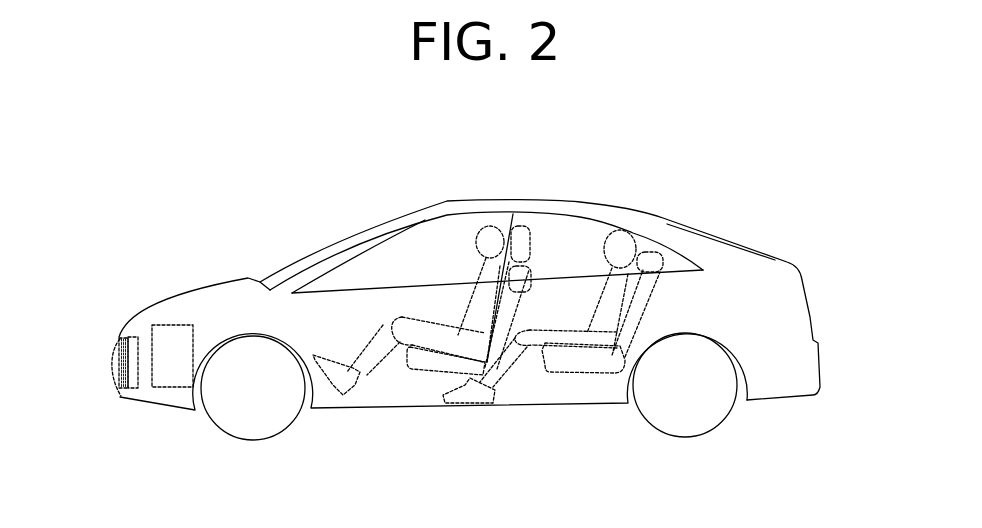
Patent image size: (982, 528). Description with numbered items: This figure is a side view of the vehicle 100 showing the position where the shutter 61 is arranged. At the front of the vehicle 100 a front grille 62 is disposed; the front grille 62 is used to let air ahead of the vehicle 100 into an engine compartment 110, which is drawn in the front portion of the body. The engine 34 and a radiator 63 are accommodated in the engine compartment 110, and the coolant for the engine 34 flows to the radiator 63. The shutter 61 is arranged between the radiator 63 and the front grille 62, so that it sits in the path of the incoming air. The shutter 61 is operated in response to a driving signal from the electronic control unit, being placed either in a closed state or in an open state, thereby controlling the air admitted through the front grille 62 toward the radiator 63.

The vehicle 100 is at (302, 252).
The engine compartment 110 is at (179, 313).
The engine 34 is at (189, 370).
The front grille 62 is at (112, 348).
The shutter 61 is at (123, 389).
The radiator 63 is at (133, 389).